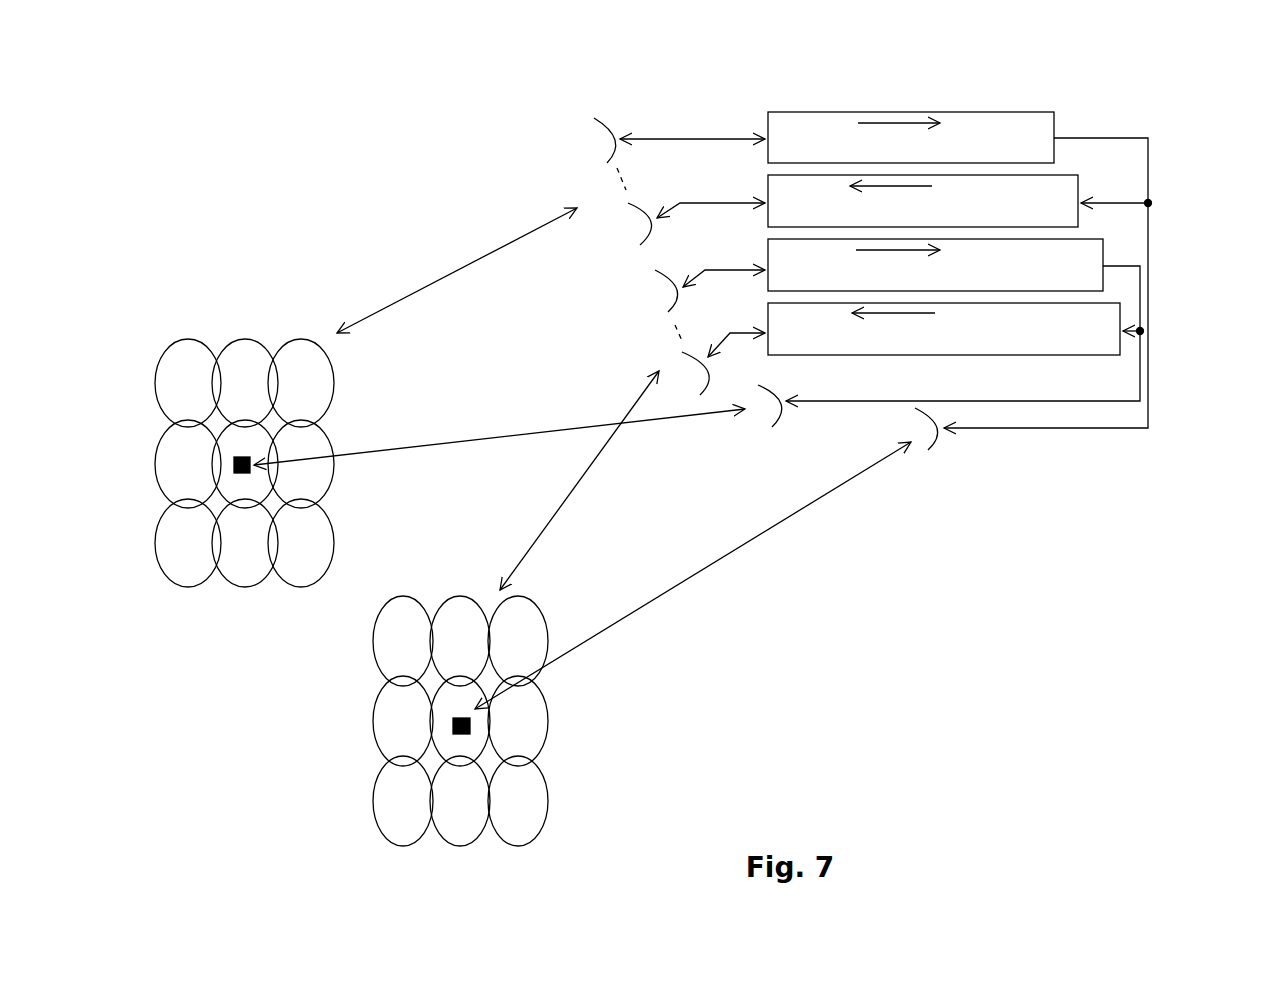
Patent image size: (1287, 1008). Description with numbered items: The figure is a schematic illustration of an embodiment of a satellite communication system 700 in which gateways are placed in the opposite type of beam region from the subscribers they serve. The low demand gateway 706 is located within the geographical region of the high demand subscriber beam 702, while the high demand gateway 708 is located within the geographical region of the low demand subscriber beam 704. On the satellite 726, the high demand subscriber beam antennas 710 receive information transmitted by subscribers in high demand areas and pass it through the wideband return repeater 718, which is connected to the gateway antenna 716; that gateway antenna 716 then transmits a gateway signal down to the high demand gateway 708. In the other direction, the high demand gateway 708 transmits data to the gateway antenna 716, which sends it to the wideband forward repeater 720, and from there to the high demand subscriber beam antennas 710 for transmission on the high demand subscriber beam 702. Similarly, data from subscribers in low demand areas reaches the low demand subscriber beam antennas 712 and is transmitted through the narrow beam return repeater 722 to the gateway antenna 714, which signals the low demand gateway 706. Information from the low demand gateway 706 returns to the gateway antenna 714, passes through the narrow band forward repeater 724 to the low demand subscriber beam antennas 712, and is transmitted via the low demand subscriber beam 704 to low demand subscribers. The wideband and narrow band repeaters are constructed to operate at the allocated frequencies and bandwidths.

The satellite communication system 700 is at (1157, 557).
The high demand subscriber beam 702 is at (269, 598).
The low demand subscriber beam 704 is at (602, 750).
The low demand gateway 706 is at (246, 456).
The high demand gateway 708 is at (453, 726).
The high demand subscriber beam antennas 710 is at (603, 96).
The low demand subscriber beam antennas 712 is at (646, 336).
The gateway antenna 714 is at (777, 410).
The gateway antenna 716 is at (937, 444).
The wideband return repeater 718 is at (1034, 110).
The wideband forward repeater 720 is at (1066, 175).
The narrow beam return repeater 722 is at (1082, 239).
The narrow band forward repeater 724 is at (1112, 300).
The satellite 726 is at (1183, 165).